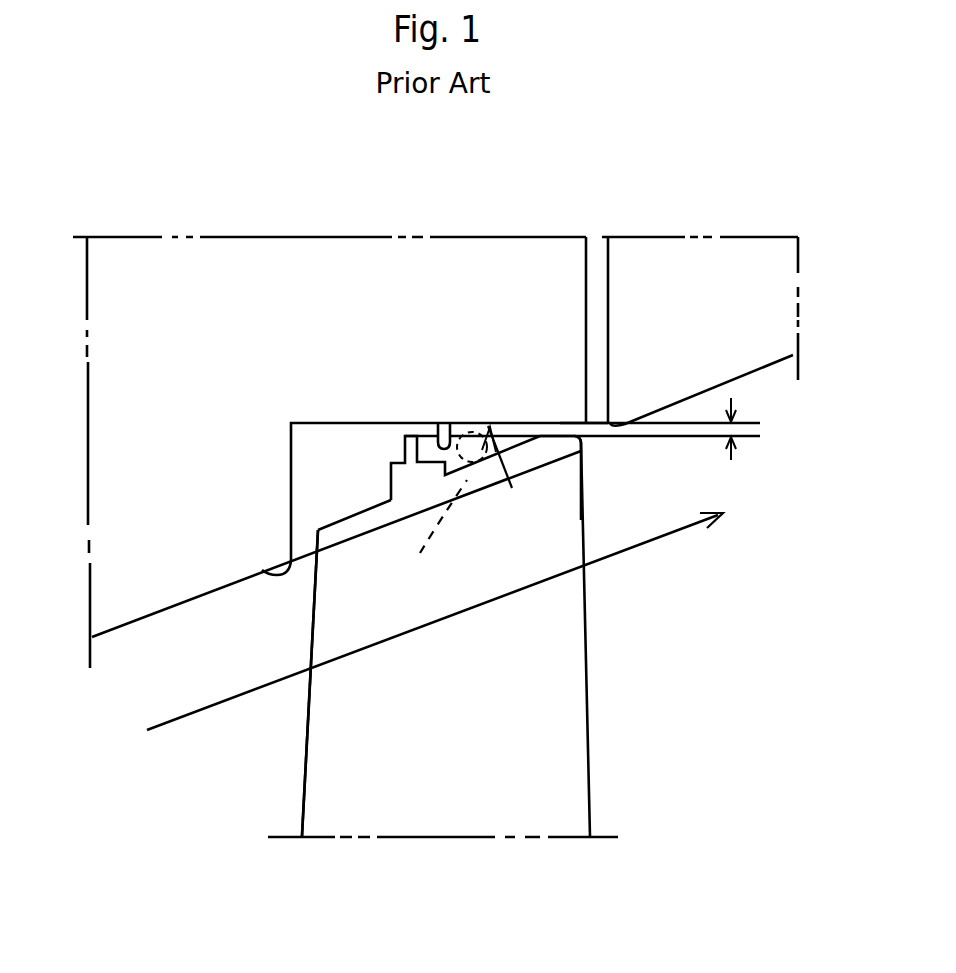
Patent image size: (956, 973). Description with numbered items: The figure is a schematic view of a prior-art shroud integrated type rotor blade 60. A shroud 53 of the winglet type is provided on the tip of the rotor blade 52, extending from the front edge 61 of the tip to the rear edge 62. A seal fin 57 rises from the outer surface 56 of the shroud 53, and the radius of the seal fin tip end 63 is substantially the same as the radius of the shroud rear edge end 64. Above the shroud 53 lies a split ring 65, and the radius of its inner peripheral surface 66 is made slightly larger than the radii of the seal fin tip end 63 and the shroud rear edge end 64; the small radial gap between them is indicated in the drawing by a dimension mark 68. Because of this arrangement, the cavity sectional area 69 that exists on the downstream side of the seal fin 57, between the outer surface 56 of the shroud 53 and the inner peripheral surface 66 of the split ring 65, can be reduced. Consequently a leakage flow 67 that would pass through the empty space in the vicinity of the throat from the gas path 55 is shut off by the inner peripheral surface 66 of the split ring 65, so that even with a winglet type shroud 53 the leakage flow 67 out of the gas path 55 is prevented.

The rotor blade 52 is at (568, 808).
The shroud 53 is at (313, 540).
The gas path 55 is at (648, 543).
The outer surface 56 is at (347, 520).
The seal fin 57 is at (390, 437).
The shroud integrated type rotor blade 60 is at (305, 763).
The front edge 61 is at (262, 570).
The rear edge 62 is at (582, 450).
The seal fin tip end 63 is at (413, 423).
The shroud rear edge end 64 is at (567, 423).
The split ring 65 is at (302, 260).
The inner peripheral surface 66 is at (450, 423).
The leakage flow 67 is at (510, 417).
The plate thickness 68 is at (733, 426).
The cavity sectional area 69 is at (510, 488).